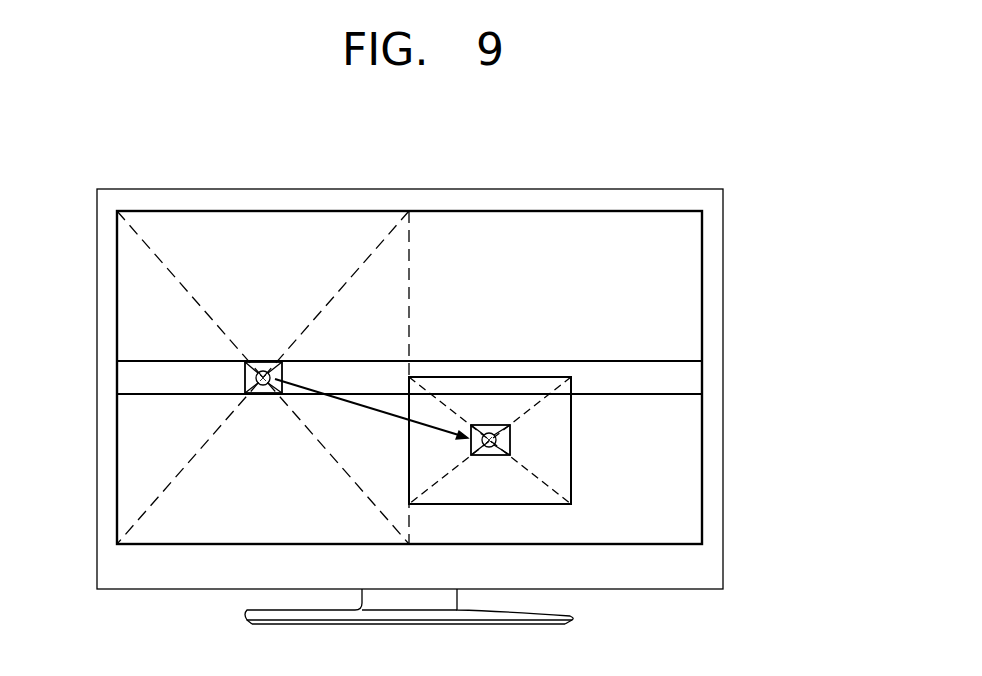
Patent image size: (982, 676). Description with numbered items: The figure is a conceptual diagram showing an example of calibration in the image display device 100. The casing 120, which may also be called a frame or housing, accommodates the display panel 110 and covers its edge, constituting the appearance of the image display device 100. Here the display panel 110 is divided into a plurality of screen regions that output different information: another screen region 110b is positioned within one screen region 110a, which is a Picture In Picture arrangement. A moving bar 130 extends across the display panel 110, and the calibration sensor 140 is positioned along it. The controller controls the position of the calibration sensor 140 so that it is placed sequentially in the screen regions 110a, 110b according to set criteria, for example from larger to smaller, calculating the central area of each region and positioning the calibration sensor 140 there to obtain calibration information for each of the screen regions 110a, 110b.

The image display device 100 is at (738, 213).
The display panel 110 is at (690, 302).
The screen region 110a is at (201, 211).
The another screen region 110b is at (491, 377).
The casing 120 is at (720, 258).
The moving bar 130 is at (690, 383).
The calibration sensor 140 is at (263, 362).